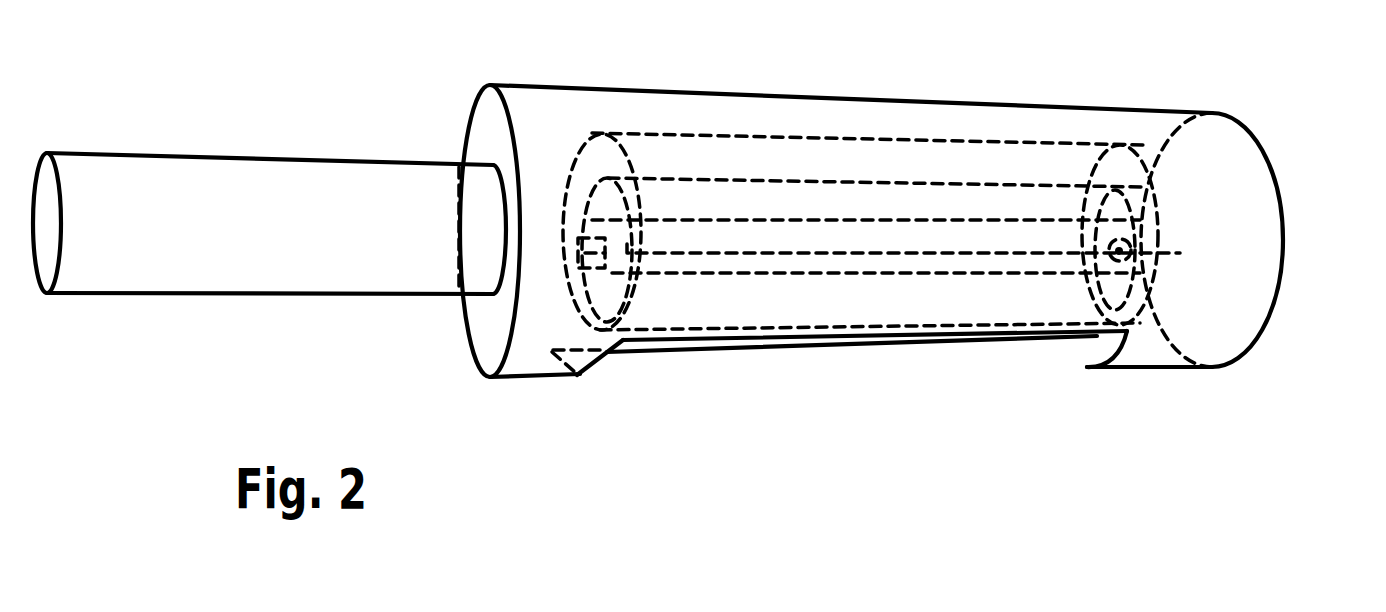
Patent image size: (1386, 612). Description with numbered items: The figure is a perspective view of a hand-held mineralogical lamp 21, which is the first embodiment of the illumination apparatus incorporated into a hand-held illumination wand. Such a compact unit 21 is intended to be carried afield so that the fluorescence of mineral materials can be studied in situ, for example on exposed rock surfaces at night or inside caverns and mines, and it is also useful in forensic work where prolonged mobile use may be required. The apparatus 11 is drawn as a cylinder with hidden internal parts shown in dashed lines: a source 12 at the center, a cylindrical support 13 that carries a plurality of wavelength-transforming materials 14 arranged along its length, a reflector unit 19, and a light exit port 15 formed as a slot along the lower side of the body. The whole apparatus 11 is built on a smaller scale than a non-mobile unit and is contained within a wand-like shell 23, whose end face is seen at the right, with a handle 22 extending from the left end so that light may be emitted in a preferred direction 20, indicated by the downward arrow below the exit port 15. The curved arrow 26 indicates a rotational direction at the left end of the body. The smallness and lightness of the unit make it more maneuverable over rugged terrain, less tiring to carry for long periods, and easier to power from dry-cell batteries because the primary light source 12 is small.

The apparatus 11 is at (1187, 203).
The source 12 is at (610, 258).
The cylindrical support 13 is at (588, 133).
The wavelength-transforming materials 14 is at (935, 140).
The light exit port 15 is at (945, 355).
The reflector unit 19 is at (775, 175).
The preferred direction 20 is at (773, 353).
The hand-held mineralogical lamp 21 is at (1120, 175).
The handle 22 is at (402, 153).
The wand-like shell 23 is at (1287, 233).
The direction of rotation 26 is at (538, 228).